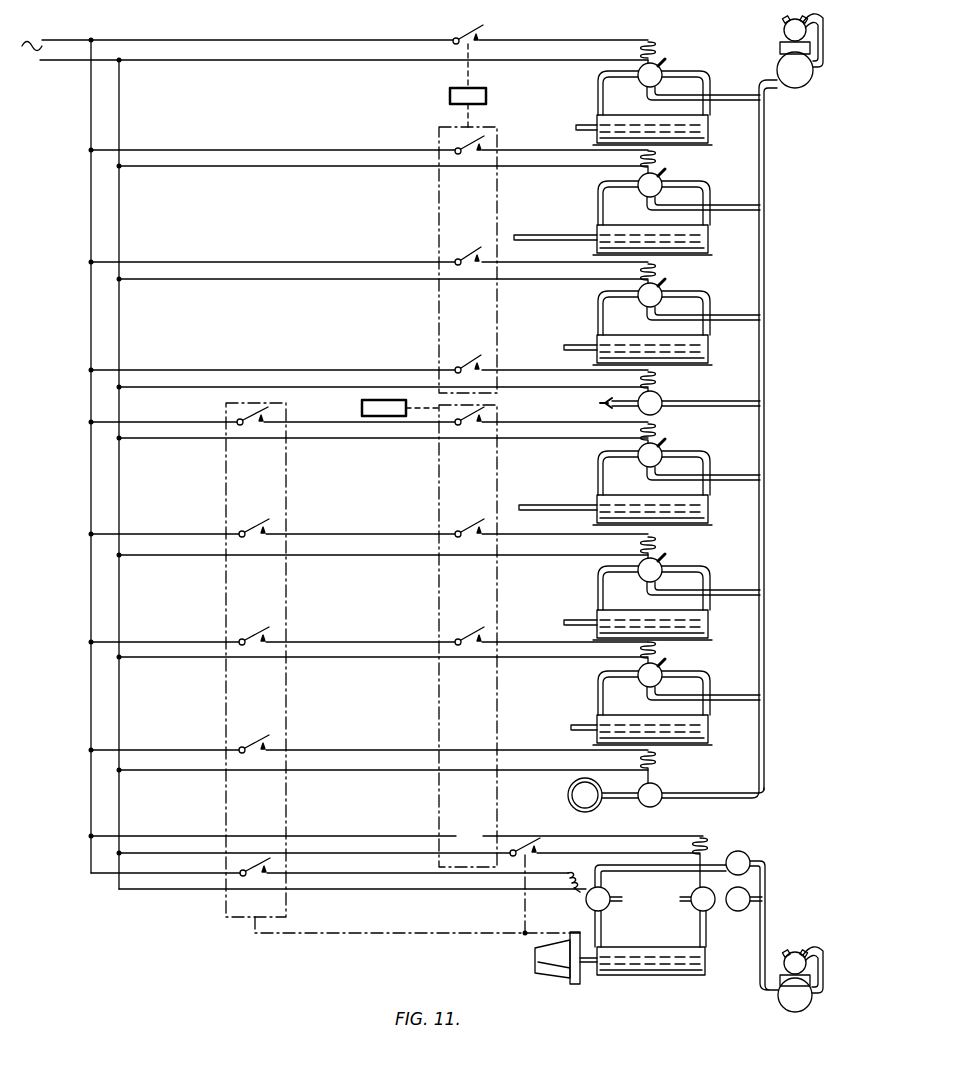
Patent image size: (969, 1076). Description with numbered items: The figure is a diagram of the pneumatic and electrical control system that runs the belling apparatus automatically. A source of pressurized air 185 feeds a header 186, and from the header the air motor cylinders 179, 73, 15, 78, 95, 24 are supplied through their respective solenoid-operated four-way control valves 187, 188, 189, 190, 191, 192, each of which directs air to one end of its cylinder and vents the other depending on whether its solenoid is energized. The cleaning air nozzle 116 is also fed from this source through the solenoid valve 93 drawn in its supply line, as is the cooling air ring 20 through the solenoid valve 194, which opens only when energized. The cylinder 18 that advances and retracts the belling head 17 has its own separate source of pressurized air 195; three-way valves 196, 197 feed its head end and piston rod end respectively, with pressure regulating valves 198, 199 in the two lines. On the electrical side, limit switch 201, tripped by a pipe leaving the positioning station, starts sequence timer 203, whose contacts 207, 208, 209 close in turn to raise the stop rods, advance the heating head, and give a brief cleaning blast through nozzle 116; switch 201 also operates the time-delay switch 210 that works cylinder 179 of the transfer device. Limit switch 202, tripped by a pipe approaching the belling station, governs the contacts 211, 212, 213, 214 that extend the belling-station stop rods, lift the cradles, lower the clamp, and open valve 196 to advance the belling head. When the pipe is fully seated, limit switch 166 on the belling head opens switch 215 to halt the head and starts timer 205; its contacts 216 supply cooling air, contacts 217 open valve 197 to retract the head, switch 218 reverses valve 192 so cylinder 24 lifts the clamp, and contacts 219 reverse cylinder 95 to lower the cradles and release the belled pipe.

The air motor cylinder 15 is at (708, 346).
The belling head 17 is at (535, 958).
The cylinder 18 is at (608, 976).
The cooling air ring 20 is at (567, 796).
The air motor cylinder 24 is at (708, 738).
The air motor cylinder 73 is at (708, 237).
The air motor cylinder 78 is at (694, 526).
The valve 93 is at (660, 400).
The air motor cylinder 95 is at (700, 630).
The cleaning air nozzle 116 is at (602, 407).
The limit switch 166 is at (576, 930).
The air motor cylinder 179 is at (708, 130).
The source of pressurized air 185 is at (803, 82).
The header 186 is at (766, 158).
The control valve 187 is at (640, 83).
The control valve 188 is at (654, 174).
The control valve 189 is at (662, 294).
The control valve 190 is at (659, 447).
The control valve 191 is at (642, 577).
The control valve 192 is at (642, 684).
The control valve 194 is at (654, 786).
The source of pressurized air 195 is at (796, 950).
The control valve 196 is at (690, 908).
The control valve 197 is at (604, 890).
The pressure regulating valve 198 is at (736, 850).
The pressure regulating valve 199 is at (732, 909).
The limit switch 201 is at (448, 88).
The limit switch 202 is at (362, 407).
The sequence timer 203 is at (500, 131).
The timer 205 is at (234, 918).
The contacts 207 is at (454, 130).
The contacts 208 is at (458, 256).
The contacts 209 is at (454, 366).
The switch 210 is at (238, 420).
The contacts 211 is at (477, 411).
The contacts 212 is at (462, 528).
The switch 213 is at (462, 638).
The contacts 214 is at (498, 467).
The switch 215 is at (517, 850).
The contacts 216 is at (247, 749).
The contacts 217 is at (250, 880).
The switch 218 is at (247, 638).
The contacts 219 is at (247, 528).